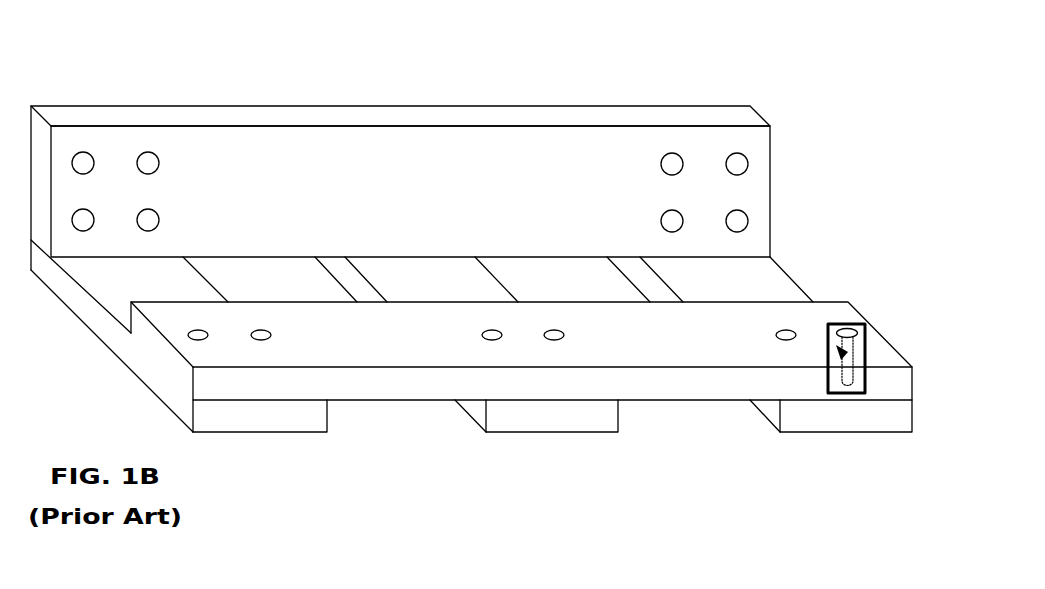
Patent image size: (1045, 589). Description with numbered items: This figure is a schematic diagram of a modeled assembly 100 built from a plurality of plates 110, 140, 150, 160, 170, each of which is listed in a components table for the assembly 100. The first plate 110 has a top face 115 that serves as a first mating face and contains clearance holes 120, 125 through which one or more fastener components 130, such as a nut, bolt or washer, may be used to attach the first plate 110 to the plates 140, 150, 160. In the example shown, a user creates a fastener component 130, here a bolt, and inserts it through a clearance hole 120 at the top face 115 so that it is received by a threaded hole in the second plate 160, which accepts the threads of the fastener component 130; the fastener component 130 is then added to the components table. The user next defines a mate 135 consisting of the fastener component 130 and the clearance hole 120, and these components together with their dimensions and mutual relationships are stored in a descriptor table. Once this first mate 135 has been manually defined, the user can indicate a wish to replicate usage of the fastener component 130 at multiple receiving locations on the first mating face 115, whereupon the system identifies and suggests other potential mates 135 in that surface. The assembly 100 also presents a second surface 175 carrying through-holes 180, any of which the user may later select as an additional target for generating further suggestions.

The modeled assembly 100 is at (847, 61).
The first plate 110 is at (160, 347).
The top face of the first plate 115 is at (370, 359).
The clearance hole 120 is at (200, 340).
The clearance hole 125 is at (494, 340).
The fastener component 130 is at (848, 352).
The mate 135 is at (849, 323).
The plate 140 is at (130, 291).
The plate 150 is at (422, 291).
The second plate 160 is at (727, 293).
The plate 170 is at (250, 117).
The second surface 175 is at (457, 208).
The through-hole 180 is at (140, 171).